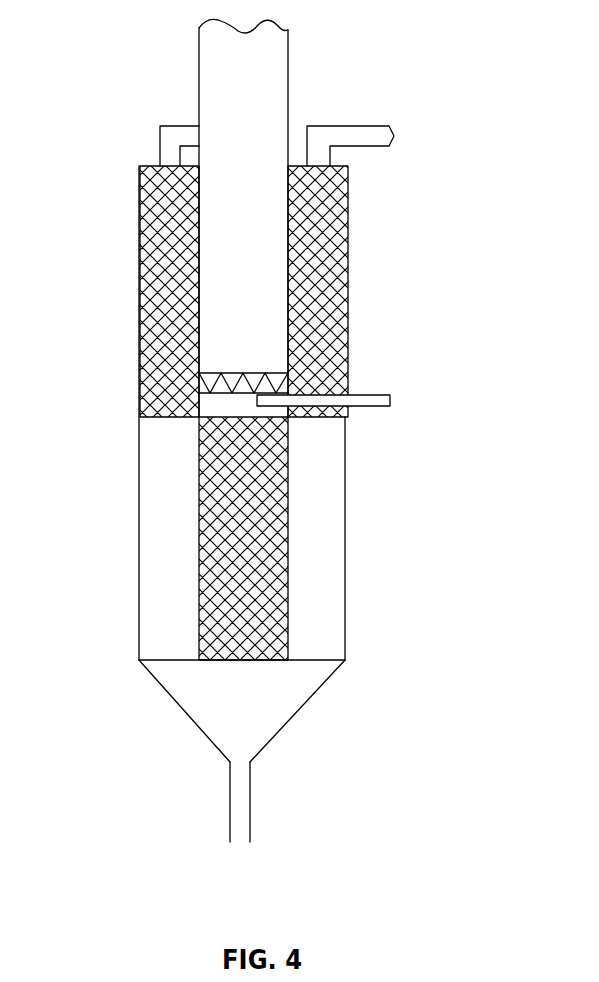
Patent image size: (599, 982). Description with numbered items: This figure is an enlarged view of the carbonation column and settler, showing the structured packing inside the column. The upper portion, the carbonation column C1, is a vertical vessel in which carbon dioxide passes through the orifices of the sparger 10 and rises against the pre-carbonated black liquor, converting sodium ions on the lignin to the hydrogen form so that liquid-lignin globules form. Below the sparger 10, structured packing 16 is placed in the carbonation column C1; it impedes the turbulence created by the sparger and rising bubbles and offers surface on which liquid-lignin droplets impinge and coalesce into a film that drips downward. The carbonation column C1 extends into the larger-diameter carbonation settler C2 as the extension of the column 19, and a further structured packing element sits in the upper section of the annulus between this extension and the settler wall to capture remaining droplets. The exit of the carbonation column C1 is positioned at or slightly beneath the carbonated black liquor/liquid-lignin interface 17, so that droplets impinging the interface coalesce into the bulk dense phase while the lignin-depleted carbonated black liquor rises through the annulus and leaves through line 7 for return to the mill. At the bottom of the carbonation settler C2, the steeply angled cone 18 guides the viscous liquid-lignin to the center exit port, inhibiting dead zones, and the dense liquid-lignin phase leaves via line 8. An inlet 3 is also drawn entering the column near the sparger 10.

The inlet line for second stream 3 is at (403, 400).
The line 7 is at (402, 136).
The line 8 is at (238, 845).
The sparger 10 is at (324, 385).
The structured packing 16 is at (198, 465).
The carbonated black liquor/liquid-lignin interface 17 is at (312, 660).
The cone 18 is at (297, 708).
The extension of the column 19 is at (300, 533).
The carbonation column C1 is at (367, 277).
The carbonation settler C2 is at (239, 712).